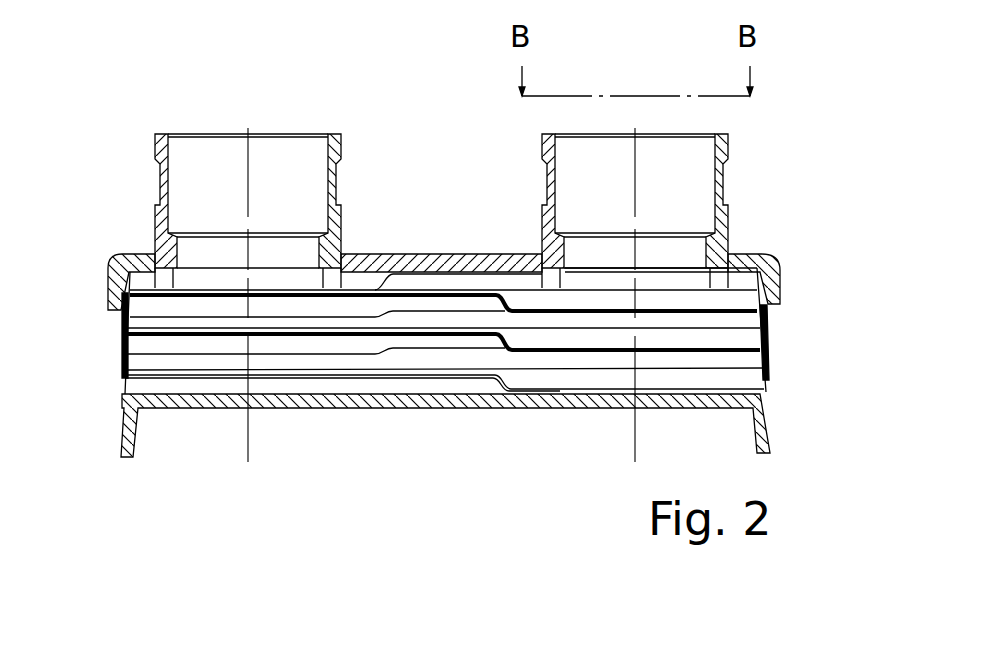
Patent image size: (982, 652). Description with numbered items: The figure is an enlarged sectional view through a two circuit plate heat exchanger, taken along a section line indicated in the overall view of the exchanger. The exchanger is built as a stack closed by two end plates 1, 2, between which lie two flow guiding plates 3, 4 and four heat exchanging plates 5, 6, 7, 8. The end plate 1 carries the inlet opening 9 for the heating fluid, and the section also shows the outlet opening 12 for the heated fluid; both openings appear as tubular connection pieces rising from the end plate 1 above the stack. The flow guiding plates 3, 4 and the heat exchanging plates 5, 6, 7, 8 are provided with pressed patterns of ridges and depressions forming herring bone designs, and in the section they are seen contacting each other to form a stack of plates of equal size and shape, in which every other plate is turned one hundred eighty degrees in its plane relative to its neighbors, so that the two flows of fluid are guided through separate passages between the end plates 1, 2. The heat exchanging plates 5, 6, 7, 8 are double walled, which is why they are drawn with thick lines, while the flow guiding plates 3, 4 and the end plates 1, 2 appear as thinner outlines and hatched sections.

The end plate 1 is at (363, 253).
The end plate 2 is at (393, 407).
The flow guiding plate 3 is at (386, 277).
The flow guiding plate 4 is at (497, 400).
The heat exchanging plate 5 is at (458, 293).
The heat exchanging plate 6 is at (110, 310).
The heat exchanging plate 7 is at (753, 347).
The heat exchanging plate 8 is at (123, 360).
The inlet opening 9 is at (341, 137).
The outlet opening 12 is at (728, 137).